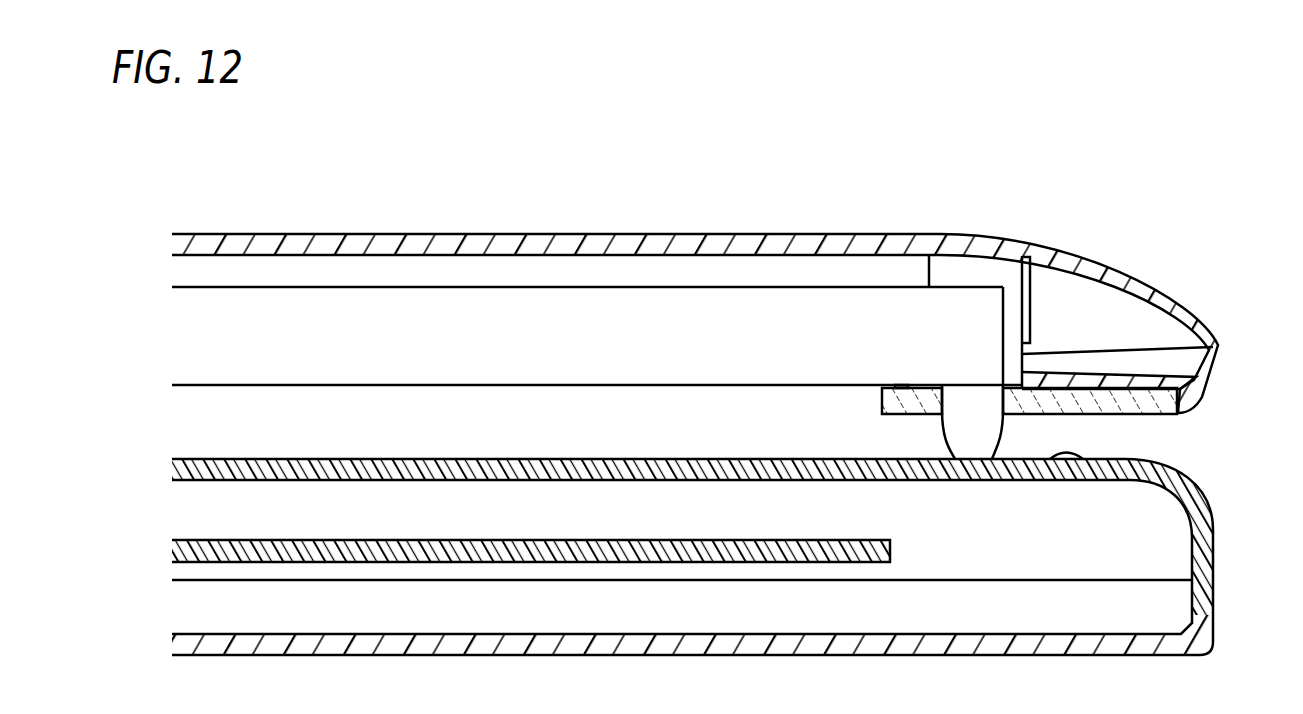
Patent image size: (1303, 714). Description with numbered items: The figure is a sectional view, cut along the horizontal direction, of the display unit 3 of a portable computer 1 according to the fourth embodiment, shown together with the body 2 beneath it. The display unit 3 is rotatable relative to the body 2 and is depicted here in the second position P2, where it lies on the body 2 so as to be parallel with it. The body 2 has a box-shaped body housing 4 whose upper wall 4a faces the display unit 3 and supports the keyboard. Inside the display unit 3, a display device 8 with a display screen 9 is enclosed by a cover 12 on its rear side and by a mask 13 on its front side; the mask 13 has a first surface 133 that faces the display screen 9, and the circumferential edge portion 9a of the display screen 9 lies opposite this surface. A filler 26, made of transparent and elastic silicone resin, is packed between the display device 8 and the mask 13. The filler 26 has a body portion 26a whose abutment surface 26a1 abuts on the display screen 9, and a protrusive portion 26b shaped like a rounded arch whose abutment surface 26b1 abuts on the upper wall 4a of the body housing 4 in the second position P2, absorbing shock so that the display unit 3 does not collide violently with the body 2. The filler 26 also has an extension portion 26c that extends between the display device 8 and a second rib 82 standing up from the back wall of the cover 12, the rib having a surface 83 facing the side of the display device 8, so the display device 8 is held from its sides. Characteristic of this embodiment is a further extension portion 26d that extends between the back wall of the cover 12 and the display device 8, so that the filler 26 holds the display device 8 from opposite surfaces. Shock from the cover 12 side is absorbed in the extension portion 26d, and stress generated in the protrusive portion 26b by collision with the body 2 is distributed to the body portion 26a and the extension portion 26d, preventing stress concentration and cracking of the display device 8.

The portable computer 1 is at (708, 192).
The body 2 is at (1213, 566).
The display unit 3 is at (1235, 345).
The body housing 4 is at (1228, 524).
The upper wall 4a is at (1083, 462).
The display device 8 is at (857, 287).
The display screen 9 is at (455, 385).
The circumferential edge portion 9a is at (977, 385).
The cover 12 is at (1142, 282).
The mask 13 is at (1123, 398).
The filler 26 is at (920, 429).
The body portion 26a is at (930, 385).
The abutment surface 26a1 is at (973, 385).
The protrusive portion 26b is at (1005, 462).
The abutment surface 26b1 is at (990, 438).
The extension portion 26c is at (1013, 302).
The extension portion 26d is at (962, 272).
The second rib 82 is at (1040, 268).
The surface 83 is at (1030, 332).
The first surface 133 is at (897, 385).
The second position P2 is at (992, 215).